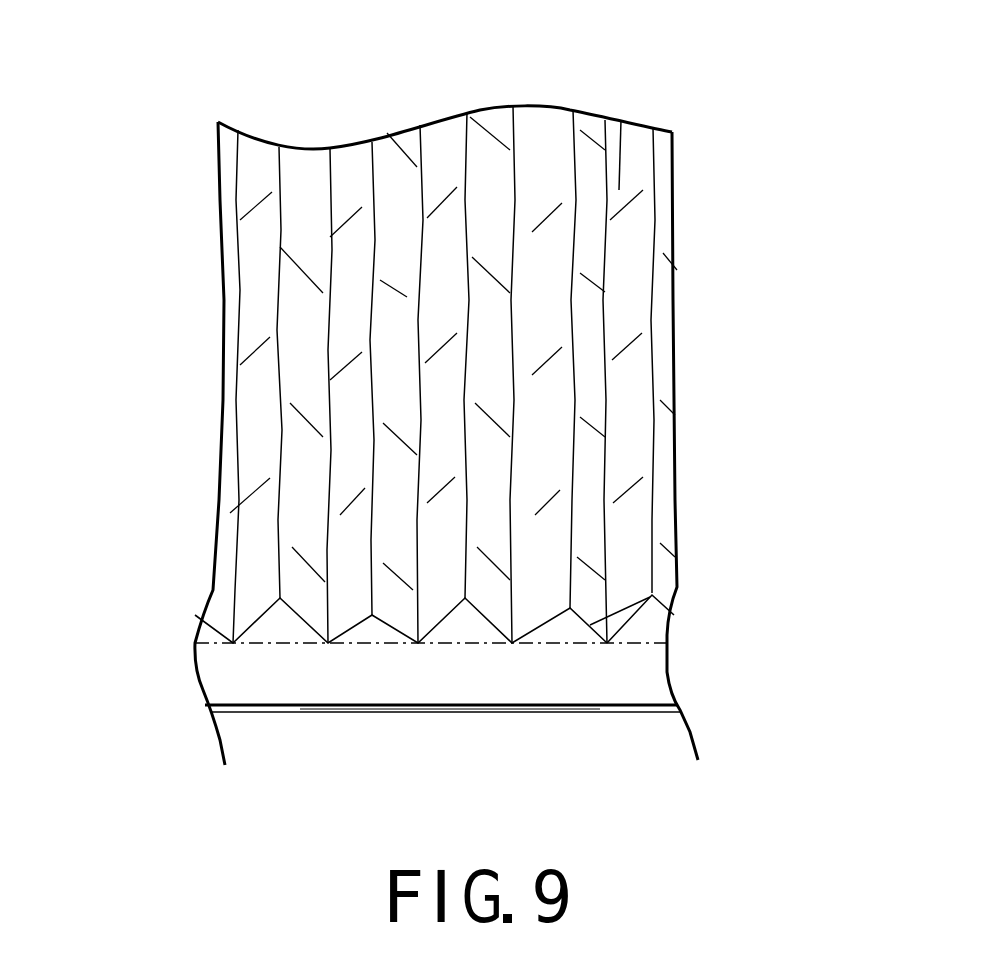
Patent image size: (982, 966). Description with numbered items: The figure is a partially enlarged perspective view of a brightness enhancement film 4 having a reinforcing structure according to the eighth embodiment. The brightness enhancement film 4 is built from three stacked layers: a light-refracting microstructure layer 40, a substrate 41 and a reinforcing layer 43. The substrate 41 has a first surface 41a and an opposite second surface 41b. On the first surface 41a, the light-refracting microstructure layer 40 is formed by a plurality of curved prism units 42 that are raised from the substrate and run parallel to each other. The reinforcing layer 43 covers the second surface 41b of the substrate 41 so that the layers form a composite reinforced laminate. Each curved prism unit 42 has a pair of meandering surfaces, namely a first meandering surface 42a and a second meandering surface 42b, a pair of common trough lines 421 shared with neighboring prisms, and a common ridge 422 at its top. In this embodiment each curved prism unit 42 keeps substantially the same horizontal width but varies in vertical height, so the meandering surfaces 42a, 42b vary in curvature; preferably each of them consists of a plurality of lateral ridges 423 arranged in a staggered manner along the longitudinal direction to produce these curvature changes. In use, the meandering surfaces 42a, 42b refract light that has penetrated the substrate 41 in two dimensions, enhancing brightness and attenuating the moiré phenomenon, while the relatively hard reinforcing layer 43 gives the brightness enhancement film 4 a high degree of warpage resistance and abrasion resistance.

The brightness enhancement film 4 is at (150, 580).
The light-refracting microstructure layer 40 is at (240, 247).
The substrate 41 is at (603, 678).
The first surface 41a is at (590, 645).
The second surface 41b is at (687, 707).
The curved prism unit 42 is at (652, 595).
The first meandering surface 42a is at (527, 470).
The second meandering surface 42b is at (583, 490).
The common trough line 421 is at (607, 320).
The common ridge 422 is at (578, 260).
The lateral ridge 423 is at (621, 118).
The reinforcing layer 43 is at (572, 713).